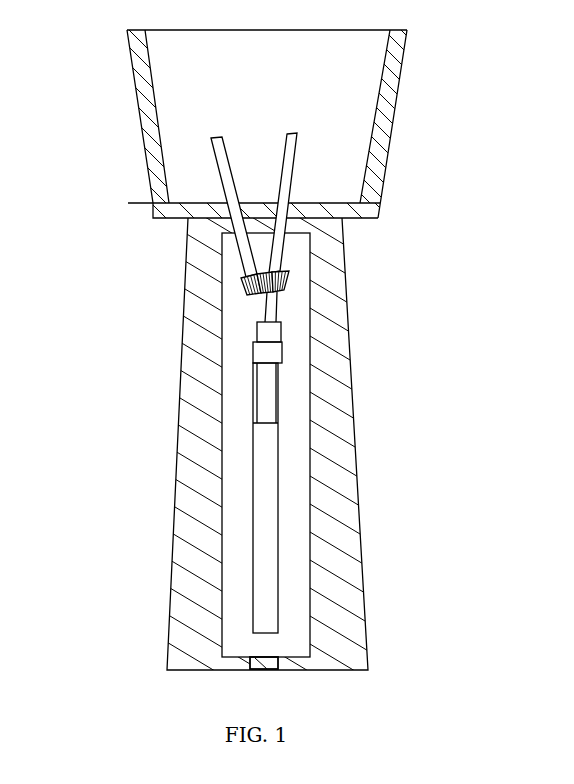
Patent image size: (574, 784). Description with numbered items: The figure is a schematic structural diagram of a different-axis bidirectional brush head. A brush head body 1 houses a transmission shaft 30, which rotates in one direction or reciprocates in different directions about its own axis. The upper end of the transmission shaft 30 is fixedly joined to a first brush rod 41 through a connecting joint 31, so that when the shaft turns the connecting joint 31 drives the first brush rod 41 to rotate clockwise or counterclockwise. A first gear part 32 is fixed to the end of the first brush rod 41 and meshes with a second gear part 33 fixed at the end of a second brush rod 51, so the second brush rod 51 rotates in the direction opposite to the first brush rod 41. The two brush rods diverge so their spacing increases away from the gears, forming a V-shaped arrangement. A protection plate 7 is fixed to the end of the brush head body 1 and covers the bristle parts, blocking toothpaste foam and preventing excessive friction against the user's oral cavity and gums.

The brush head body 1 is at (353, 433).
The protection plate 7 is at (154, 91).
The second brush rod 51 is at (223, 167).
The first brush rod 41 is at (297, 180).
The second gear part 33 is at (253, 284).
The first gear part 32 is at (287, 280).
The connecting joint 31 is at (254, 351).
The transmission shaft 30 is at (255, 465).